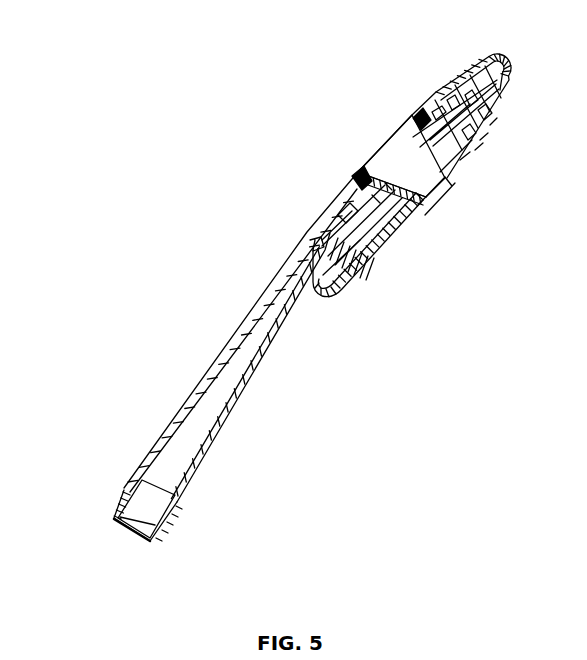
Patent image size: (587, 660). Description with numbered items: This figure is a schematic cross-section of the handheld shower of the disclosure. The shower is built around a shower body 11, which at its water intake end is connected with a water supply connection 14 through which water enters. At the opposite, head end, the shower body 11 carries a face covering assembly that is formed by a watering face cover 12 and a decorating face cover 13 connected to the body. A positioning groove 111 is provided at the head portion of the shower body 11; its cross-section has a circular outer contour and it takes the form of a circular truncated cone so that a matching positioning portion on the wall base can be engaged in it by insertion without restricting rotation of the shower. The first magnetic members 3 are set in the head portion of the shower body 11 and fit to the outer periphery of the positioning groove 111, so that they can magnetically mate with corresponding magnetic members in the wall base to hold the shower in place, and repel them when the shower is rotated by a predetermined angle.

The first magnetic member 3 is at (355, 174).
The shower body 11 is at (317, 223).
The positioning groove 111 is at (407, 163).
The watering face cover 12 is at (375, 246).
The decorating face cover 13 is at (406, 207).
The water supply connection 14 is at (128, 486).